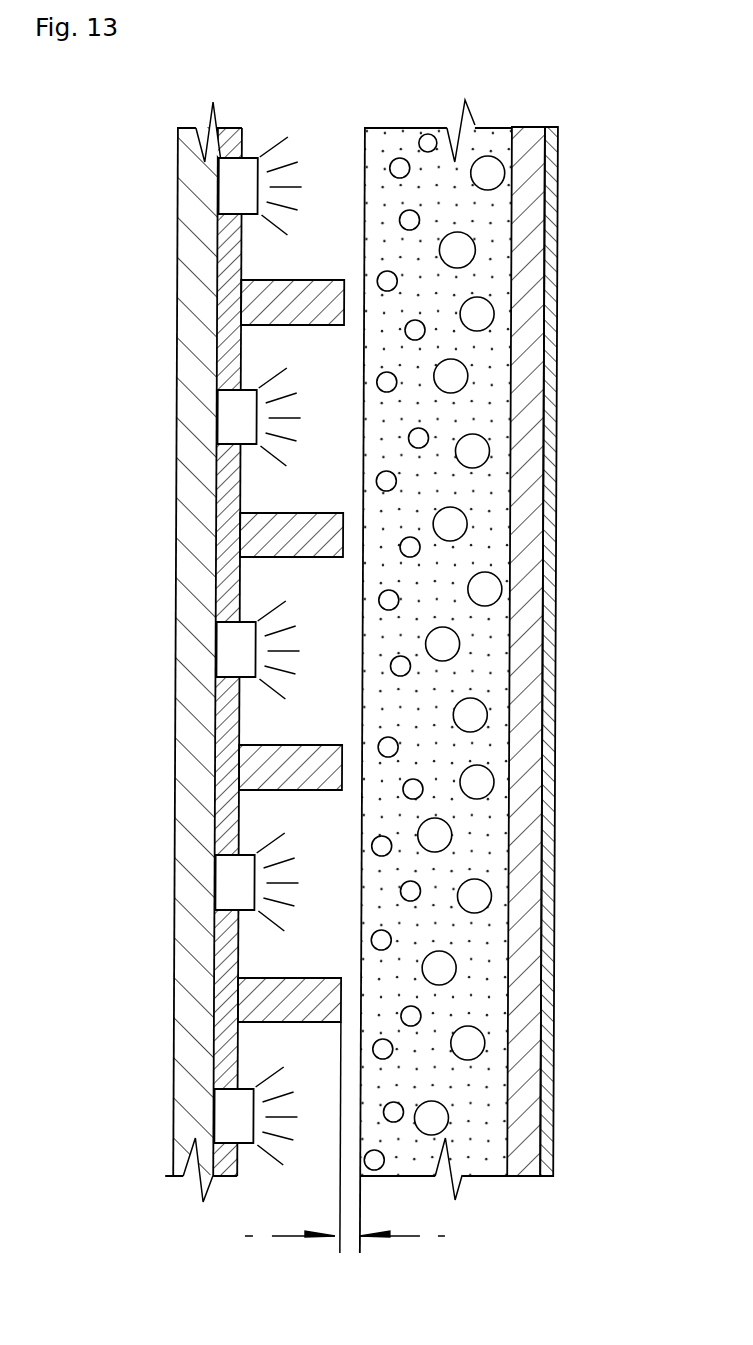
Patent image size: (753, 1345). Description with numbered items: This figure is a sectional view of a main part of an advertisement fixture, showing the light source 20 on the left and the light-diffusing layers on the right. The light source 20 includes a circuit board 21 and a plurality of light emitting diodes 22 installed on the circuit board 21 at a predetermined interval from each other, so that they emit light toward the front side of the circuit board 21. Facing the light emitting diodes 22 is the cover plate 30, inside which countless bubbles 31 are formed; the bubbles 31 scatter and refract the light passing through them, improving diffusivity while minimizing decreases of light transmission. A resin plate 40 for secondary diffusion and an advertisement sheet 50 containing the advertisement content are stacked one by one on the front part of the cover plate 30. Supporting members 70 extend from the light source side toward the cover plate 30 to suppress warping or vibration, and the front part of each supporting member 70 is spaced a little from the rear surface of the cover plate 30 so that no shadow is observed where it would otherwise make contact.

The light source 20 is at (139, 652).
The circuit board 21 is at (186, 292).
The light emitting diodes 22 is at (100, 283).
The cover plate 30 is at (495, 676).
The bubbles 31 is at (456, 378).
The resin plate for secondary diffusion 40 is at (530, 317).
The advertisement sheet 50 is at (548, 220).
The supporting member 70 is at (265, 745).